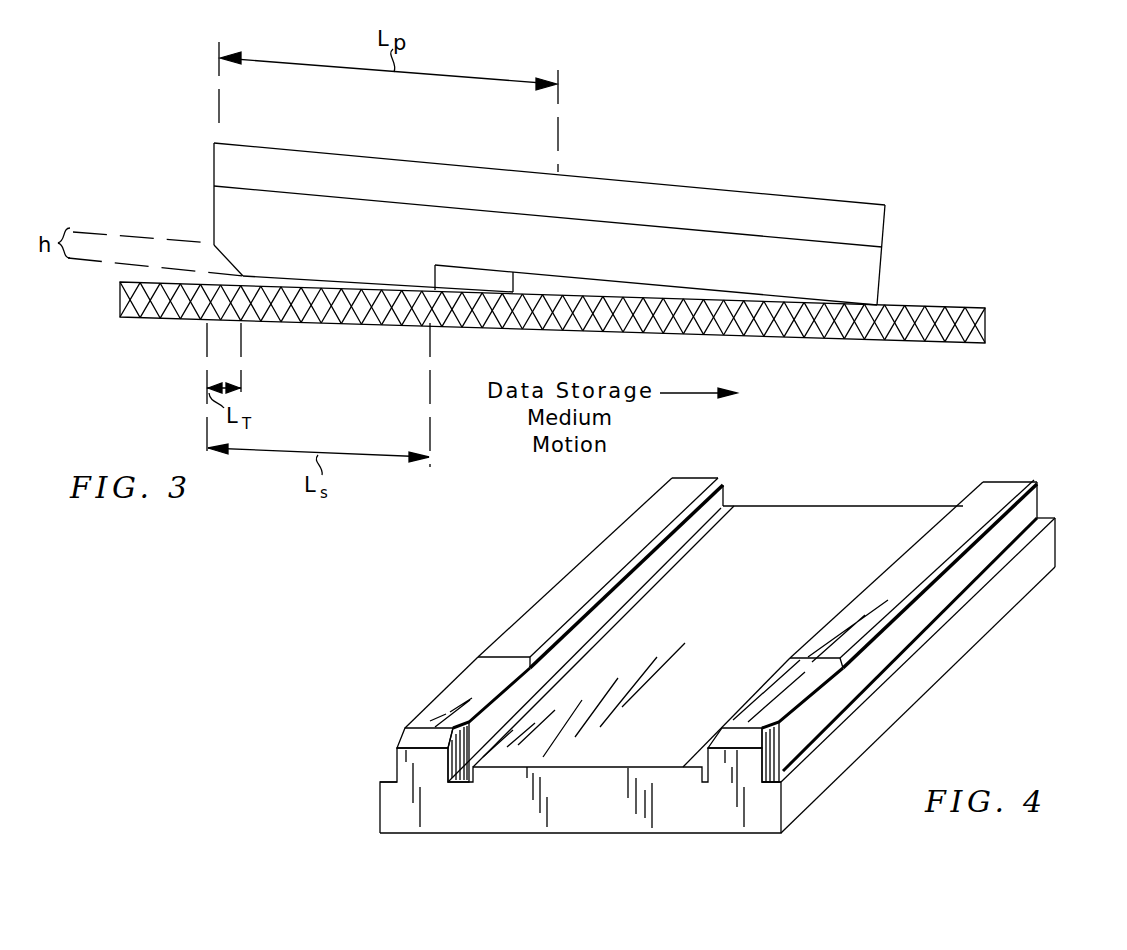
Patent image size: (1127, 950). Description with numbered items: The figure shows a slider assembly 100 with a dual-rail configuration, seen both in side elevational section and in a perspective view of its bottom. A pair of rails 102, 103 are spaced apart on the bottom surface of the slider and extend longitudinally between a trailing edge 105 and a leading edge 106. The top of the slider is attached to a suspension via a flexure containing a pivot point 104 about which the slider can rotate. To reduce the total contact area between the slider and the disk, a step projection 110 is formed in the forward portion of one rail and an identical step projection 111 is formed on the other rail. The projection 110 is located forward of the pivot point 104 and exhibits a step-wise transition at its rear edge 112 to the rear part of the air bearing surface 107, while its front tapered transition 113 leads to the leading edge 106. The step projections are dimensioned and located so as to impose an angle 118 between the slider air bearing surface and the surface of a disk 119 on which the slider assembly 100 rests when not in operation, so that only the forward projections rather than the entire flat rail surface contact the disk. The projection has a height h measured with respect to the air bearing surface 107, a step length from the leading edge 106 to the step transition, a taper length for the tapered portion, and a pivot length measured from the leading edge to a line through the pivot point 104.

In FIG. 3, the slider assembly 100 is at (605, 118).
In FIG. 4, the slider assembly 100 is at (845, 482).
In FIG. 4, the rail 102 is at (727, 490).
In FIG. 4, the rail 103 is at (1022, 512).
In FIG. 3, the pivot point 104 is at (548, 163).
In FIG. 3, the trailing edge 105 is at (880, 253).
In FIG. 3, the leading edge 106 is at (213, 213).
In FIG. 4, the leading edge 106 is at (575, 834).
In FIG. 3, the air bearing surface 107 is at (617, 283).
In FIG. 4, the air bearing surface 107 is at (602, 568).
In FIG. 3, the step projection 110 is at (304, 283).
In FIG. 4, the step projection 110 is at (442, 703).
In FIG. 4, the step projection 111 is at (790, 657).
In FIG. 3, the rear edge 112 is at (437, 283).
In FIG. 3, the front tapered transition 113 is at (217, 237).
In FIG. 4, the front tapered transition 113 is at (421, 739).
In FIG. 3, the angle 118 is at (515, 278).
In FIG. 3, the disk 119 is at (968, 308).